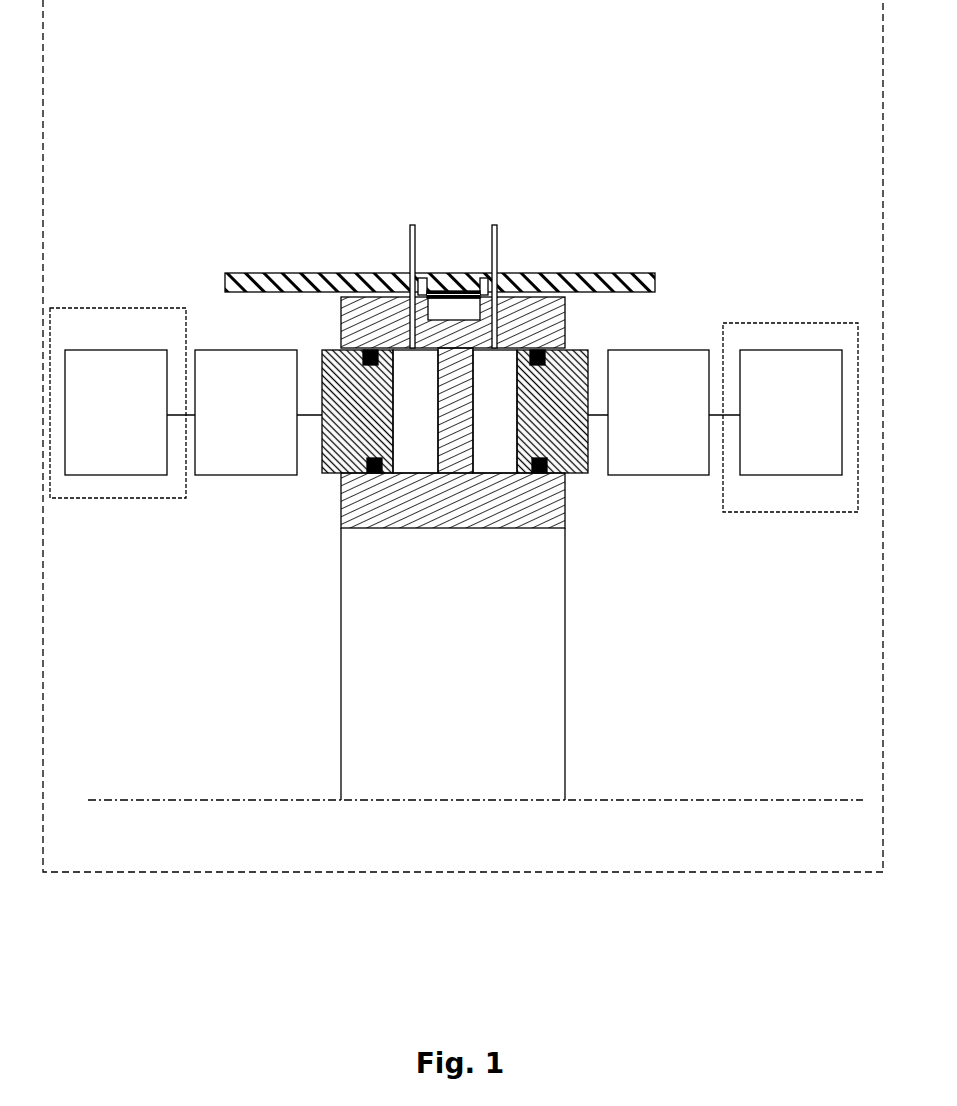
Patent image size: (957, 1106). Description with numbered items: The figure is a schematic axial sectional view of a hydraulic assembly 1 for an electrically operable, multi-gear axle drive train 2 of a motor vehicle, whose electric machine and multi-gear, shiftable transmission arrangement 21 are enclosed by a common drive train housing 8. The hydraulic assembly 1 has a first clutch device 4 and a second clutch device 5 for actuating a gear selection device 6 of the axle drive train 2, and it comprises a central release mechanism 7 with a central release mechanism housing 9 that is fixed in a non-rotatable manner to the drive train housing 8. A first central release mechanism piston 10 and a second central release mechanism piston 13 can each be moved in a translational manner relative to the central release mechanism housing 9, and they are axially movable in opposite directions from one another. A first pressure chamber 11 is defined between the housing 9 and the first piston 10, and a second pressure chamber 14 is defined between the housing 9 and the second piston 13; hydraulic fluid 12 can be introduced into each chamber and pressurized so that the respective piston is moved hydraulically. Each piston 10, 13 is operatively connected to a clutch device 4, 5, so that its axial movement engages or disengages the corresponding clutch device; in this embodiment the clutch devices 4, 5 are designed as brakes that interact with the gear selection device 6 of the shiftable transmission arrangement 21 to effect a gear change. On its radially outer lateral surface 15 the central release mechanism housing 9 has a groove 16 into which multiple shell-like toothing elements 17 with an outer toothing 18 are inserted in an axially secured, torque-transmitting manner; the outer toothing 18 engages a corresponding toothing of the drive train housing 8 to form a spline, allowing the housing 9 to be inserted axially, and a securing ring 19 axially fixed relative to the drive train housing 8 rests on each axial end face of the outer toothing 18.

The hydraulic assembly 1 is at (348, 148).
The axle drive train 2 is at (675, 872).
The first clutch device 4 is at (234, 452).
The second clutch device 5 is at (669, 453).
The gear selection device 6 is at (87, 350).
The central release mechanism 7 is at (586, 522).
The drive train housing 8 is at (601, 272).
The central release mechanism housing 9 is at (345, 505).
The first central release mechanism piston 10 is at (344, 438).
The first pressure chamber 11 is at (404, 420).
The hydraulic fluid 12 is at (414, 224).
The second central release mechanism piston 13 is at (565, 478).
The second pressure chamber 14 is at (482, 420).
The radially outer lateral surface 15 is at (520, 297).
The groove 16 is at (452, 326).
The toothing elements 17 is at (463, 308).
The outer toothing 18 is at (448, 297).
The securing ring 19 is at (420, 282).
The shiftable transmission arrangement 21 is at (93, 308).